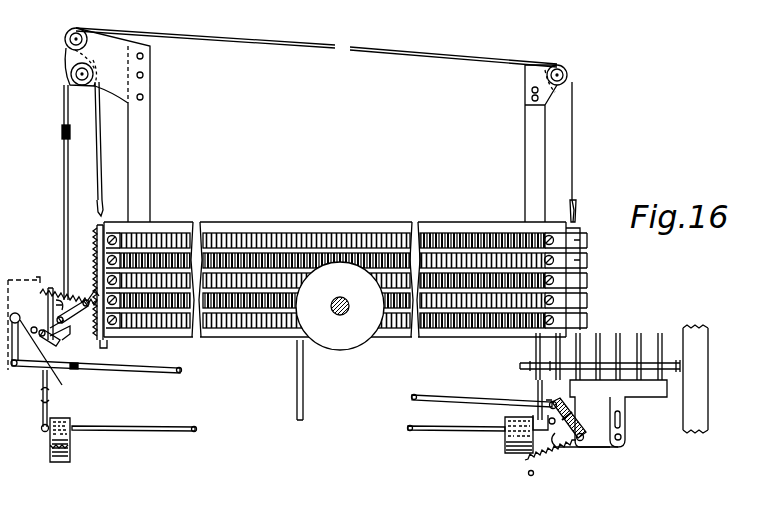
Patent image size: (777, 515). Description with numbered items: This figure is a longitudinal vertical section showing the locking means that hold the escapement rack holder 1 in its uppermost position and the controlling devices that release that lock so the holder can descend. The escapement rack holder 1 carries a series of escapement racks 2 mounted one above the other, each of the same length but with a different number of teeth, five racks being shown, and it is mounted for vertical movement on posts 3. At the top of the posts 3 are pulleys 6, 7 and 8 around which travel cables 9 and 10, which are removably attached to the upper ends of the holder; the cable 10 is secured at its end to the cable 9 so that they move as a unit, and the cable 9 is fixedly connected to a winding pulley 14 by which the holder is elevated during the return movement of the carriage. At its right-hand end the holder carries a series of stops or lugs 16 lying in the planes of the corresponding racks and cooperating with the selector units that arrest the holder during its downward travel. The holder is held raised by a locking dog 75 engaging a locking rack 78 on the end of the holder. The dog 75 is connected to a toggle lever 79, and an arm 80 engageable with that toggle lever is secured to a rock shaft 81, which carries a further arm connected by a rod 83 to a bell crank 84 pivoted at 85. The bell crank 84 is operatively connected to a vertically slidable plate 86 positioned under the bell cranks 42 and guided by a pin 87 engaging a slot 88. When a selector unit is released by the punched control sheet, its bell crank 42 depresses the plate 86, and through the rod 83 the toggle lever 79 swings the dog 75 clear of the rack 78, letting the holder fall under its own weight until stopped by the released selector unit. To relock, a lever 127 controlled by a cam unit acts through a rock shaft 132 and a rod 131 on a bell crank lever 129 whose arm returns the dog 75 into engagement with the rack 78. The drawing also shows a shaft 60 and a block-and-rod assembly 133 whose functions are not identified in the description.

The escapement rack holder 1 is at (357, 232).
The escapement racks 2 is at (430, 233).
The posts 3 is at (150, 142).
The pulley 6 is at (568, 78).
The pulley 7 is at (66, 32).
The pulley 8 is at (70, 76).
The cable 9 is at (262, 40).
The cable 10 is at (100, 142).
The winding pulley 14 is at (348, 343).
The stops or lugs 16 is at (580, 260).
The bell cranks 42 is at (660, 333).
The shaft 60 is at (530, 368).
The locking dog 75 is at (97, 232).
The locking rack 78 is at (107, 340).
The toggle lever 79 is at (72, 318).
The arm 80 is at (32, 320).
The rock shaft 81 is at (30, 345).
The rod 83 is at (175, 372).
The bell crank 84 is at (568, 409).
The pivot 85 is at (574, 443).
The vertically slidable plate 86 is at (660, 388).
The pin 87 is at (622, 434).
The slot 88 is at (622, 416).
The lever 127 is at (545, 345).
The bell crank lever 129 is at (54, 338).
The rod 131 is at (44, 380).
The rock shaft 132 is at (135, 432).
The block and rod 133 is at (471, 435).